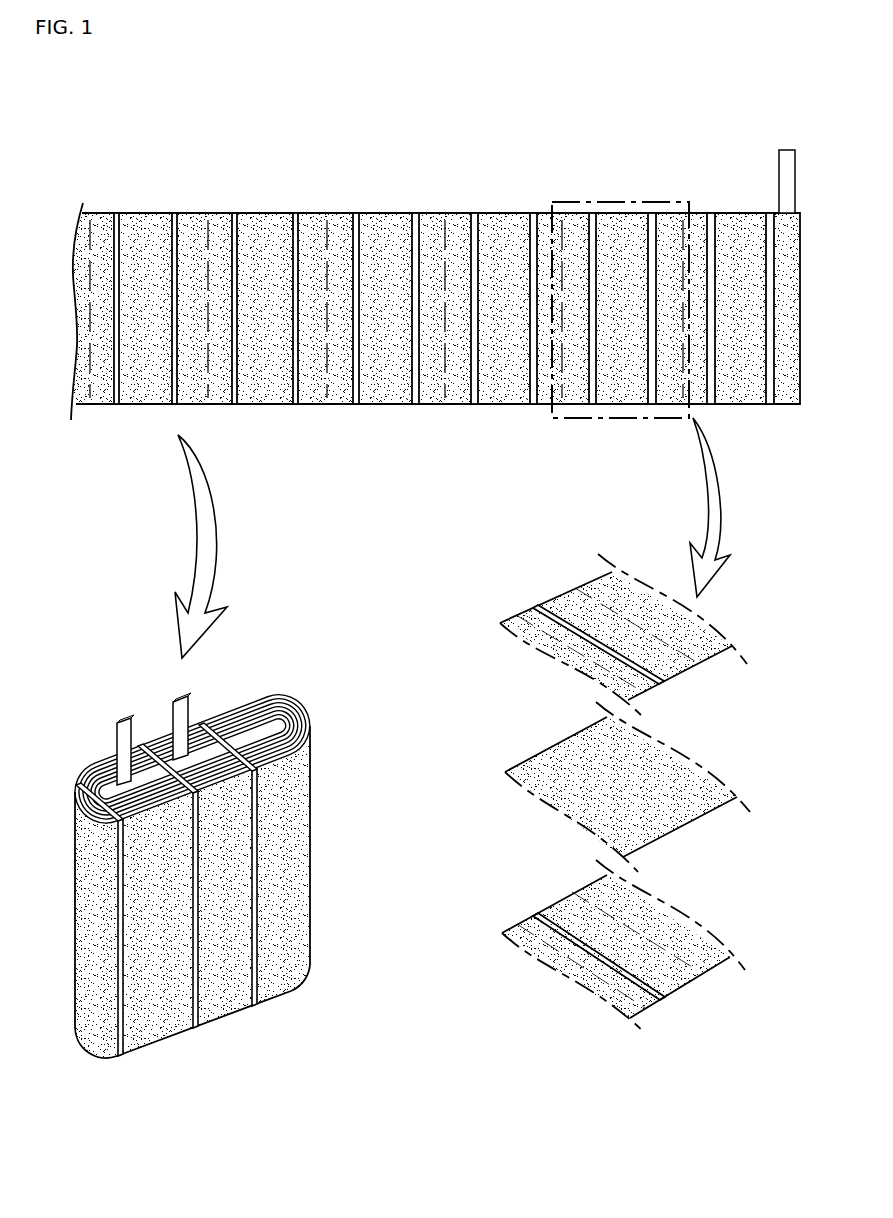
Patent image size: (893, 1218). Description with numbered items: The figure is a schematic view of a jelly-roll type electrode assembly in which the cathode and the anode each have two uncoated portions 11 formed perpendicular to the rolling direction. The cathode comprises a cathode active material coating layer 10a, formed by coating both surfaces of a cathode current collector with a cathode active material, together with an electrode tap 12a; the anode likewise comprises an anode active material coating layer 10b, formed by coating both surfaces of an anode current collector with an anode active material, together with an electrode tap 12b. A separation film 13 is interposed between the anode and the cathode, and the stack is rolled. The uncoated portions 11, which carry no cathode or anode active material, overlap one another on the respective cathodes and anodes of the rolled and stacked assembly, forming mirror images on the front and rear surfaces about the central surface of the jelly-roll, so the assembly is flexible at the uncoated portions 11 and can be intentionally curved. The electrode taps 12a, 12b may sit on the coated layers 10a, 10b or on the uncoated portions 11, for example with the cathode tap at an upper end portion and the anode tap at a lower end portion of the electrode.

The cathode active material coating layer 10a is at (520, 621).
The anode active material coating layer 10b is at (528, 931).
The uncoated portion 11 is at (533, 918).
The electrode tap 12a is at (115, 725).
The electrode tap 12b is at (177, 698).
The separation film 13 is at (556, 752).